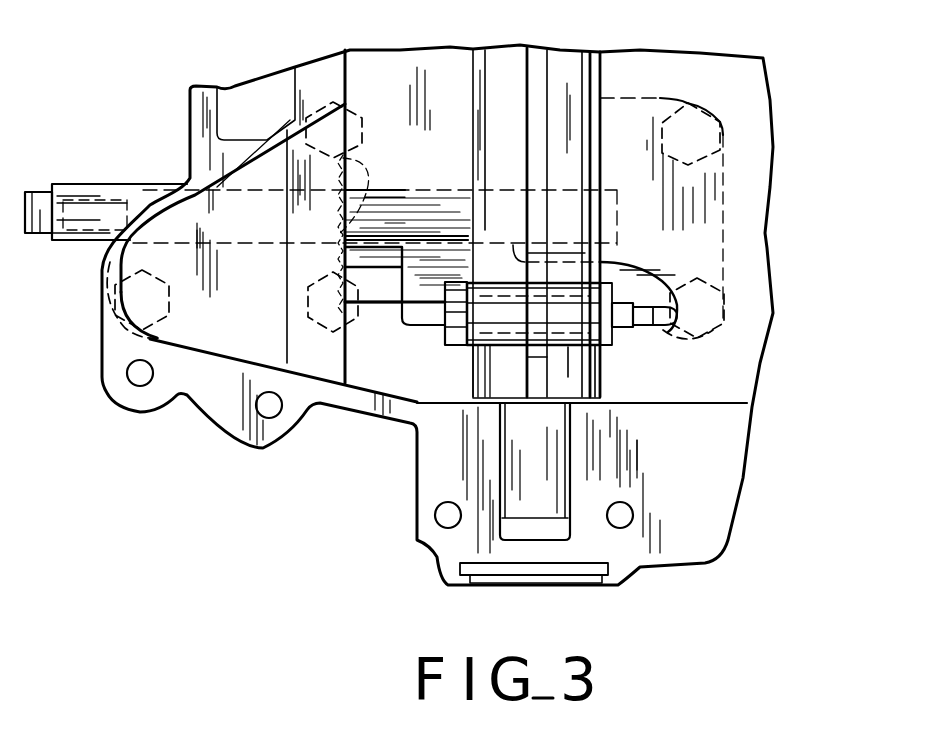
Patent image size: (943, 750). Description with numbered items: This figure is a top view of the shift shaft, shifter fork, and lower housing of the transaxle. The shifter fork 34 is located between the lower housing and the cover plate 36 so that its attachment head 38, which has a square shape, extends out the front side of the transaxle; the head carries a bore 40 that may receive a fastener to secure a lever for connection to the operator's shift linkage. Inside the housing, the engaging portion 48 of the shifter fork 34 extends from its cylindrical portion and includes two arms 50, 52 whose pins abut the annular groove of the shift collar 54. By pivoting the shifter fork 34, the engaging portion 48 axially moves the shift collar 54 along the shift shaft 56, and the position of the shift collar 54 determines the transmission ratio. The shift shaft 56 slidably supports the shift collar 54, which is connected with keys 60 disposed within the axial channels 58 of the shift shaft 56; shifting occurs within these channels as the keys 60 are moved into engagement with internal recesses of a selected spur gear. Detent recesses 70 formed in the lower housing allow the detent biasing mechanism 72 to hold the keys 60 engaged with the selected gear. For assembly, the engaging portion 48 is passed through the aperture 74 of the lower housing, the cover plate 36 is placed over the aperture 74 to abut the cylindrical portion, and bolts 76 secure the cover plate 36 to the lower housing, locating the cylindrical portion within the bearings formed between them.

The shifter fork 34 is at (103, 184).
The cover plate 36 is at (650, 97).
The attachment head 38 is at (43, 235).
The bore 40 is at (83, 210).
The engaging portion 48 is at (647, 266).
The arm 50 is at (415, 297).
The arm 52 is at (650, 325).
The shift collar 54 is at (607, 346).
The shift shaft 56 is at (547, 73).
The axial channels 58 is at (572, 388).
The keys 60 is at (536, 45).
The detent recesses 70 is at (362, 190).
The detent biasing mechanism 72 is at (345, 283).
The aperture 74 is at (714, 211).
The bolts 76 is at (328, 102).